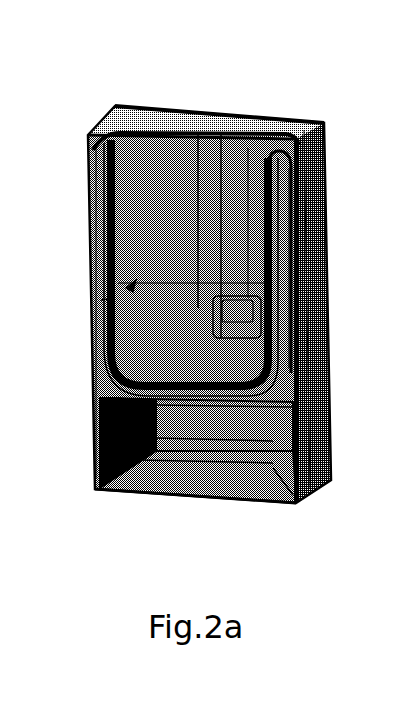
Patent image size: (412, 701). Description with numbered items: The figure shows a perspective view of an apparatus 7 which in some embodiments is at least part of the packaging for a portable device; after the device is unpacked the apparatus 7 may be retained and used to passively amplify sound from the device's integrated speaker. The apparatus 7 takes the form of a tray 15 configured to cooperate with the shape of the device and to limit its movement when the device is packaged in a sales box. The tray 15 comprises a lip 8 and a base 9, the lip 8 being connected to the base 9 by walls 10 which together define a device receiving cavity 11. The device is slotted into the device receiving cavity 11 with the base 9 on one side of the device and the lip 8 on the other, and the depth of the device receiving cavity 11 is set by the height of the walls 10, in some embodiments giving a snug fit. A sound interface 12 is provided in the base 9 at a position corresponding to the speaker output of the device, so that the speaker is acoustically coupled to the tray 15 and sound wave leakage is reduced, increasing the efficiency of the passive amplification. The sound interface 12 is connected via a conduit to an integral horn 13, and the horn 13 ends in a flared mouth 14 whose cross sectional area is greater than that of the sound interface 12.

The apparatus 7 is at (57, 509).
The lip 8 is at (100, 182).
The base 9 is at (154, 157).
The walls 10 is at (93, 128).
The device receiving cavity 11 is at (82, 263).
The sound interface 12 is at (319, 343).
The horn 13 is at (253, 507).
The flared mouth 14 is at (88, 447).
The tray 15 is at (256, 110).